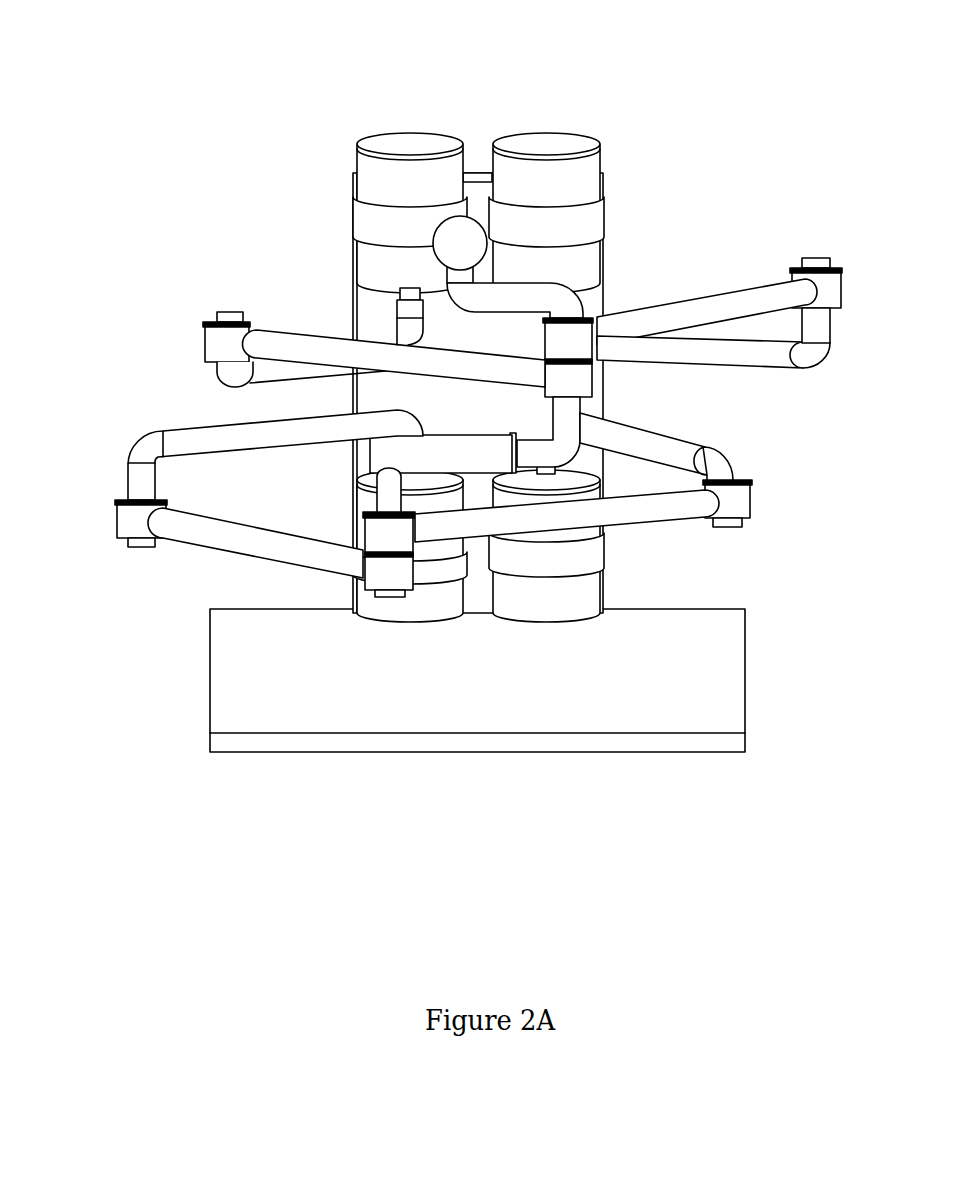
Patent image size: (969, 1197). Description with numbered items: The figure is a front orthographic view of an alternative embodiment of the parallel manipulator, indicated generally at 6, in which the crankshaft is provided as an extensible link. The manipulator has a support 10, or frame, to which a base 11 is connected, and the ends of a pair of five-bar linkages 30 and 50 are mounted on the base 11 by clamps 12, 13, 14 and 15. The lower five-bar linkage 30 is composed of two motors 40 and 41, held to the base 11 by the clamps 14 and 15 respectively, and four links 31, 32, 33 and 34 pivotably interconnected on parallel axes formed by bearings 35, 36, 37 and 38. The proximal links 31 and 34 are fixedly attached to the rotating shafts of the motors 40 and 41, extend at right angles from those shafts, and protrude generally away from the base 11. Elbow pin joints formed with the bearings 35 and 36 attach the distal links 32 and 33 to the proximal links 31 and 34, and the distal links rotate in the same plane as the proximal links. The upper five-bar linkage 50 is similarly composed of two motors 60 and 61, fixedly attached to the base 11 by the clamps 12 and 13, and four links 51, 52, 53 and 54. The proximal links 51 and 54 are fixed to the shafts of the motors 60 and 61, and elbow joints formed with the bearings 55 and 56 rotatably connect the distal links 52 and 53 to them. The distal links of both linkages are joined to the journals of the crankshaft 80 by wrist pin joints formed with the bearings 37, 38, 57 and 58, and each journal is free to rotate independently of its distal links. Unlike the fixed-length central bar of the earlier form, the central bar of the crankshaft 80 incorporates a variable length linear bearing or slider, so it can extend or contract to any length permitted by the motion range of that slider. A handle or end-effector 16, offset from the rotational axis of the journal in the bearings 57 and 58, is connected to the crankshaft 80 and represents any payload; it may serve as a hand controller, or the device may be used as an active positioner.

The alternative embodiment of the parallel manipulator 6 is at (320, 85).
The support 10 is at (735, 640).
The base 11 is at (593, 295).
The clamp 12 is at (363, 212).
The clamp 13 is at (593, 217).
The clamp 14 is at (428, 560).
The clamp 15 is at (592, 548).
The handle or end-effector 16 is at (470, 240).
The five-bar linkage 30 is at (428, 521).
The proximal link 31 is at (200, 440).
The distal link 32 is at (260, 548).
The distal link 33 is at (612, 510).
The proximal link 34 is at (690, 445).
The bearing 35 is at (120, 522).
The bearing 36 is at (752, 505).
The bearing 37 is at (378, 528).
The bearing 38 is at (378, 568).
The motor 40 is at (412, 605).
The motor 41 is at (548, 605).
The five-bar linkage 50 is at (523, 280).
The proximal link 51 is at (393, 330).
The distal link 52 is at (335, 345).
The distal link 53 is at (722, 300).
The proximal link 54 is at (812, 355).
The bearing 55 is at (210, 345).
The bearing 56 is at (827, 293).
The bearing 57 is at (590, 352).
The bearing 58 is at (578, 380).
The motor 60 is at (413, 138).
The motor 61 is at (547, 138).
The crankshaft 80 is at (473, 421).